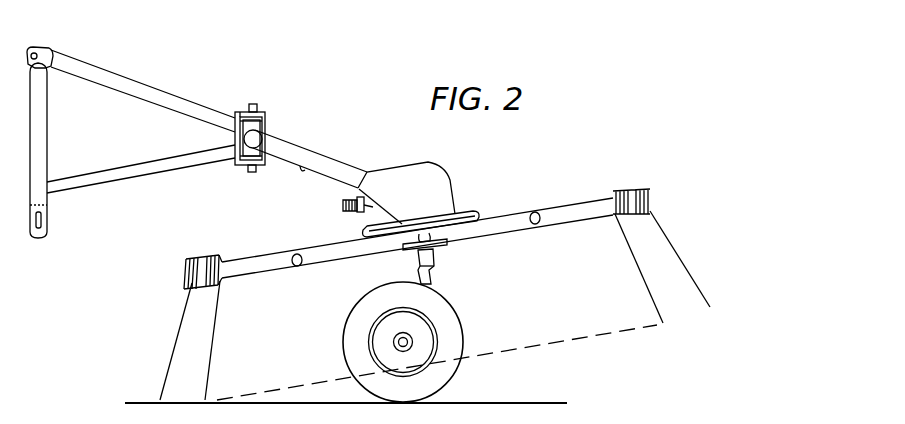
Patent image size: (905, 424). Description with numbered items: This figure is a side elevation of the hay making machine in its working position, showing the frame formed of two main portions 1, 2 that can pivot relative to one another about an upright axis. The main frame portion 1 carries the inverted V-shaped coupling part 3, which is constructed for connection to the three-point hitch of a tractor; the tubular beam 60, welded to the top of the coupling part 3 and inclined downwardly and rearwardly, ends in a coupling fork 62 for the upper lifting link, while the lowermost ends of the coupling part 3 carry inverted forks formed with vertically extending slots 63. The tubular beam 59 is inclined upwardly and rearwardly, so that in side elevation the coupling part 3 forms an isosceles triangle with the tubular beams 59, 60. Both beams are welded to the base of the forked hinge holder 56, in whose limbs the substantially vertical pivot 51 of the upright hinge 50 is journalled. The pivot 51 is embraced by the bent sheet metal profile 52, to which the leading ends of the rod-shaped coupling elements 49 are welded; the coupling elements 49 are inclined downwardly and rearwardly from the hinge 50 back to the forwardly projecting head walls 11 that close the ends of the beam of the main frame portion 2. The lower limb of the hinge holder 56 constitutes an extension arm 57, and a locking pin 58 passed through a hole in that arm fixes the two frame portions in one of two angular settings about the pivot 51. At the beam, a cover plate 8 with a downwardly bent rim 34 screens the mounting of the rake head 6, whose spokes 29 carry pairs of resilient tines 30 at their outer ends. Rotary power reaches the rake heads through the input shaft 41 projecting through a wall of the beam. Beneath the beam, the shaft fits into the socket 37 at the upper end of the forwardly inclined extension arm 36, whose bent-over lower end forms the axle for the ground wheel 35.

The main frame portion 1 is at (131, 134).
The main frame portion 2 is at (354, 172).
The coupling part 3 is at (40, 115).
The rake head 6 is at (238, 254).
The cover plate 8 is at (421, 222).
The head wall 11 is at (393, 175).
The spoke 29 is at (565, 210).
The resilient tines 30 is at (178, 320).
The rim 34 is at (466, 212).
The ground wheel 35 is at (360, 317).
The extension arm 36 is at (434, 277).
The socket 37 is at (408, 262).
The input shaft 41 is at (343, 207).
The coupling element 49 is at (310, 167).
The hinge 50 is at (251, 138).
The pivot 51 is at (254, 104).
The sheet metal profile 52 is at (258, 124).
The hinge holder 56 is at (240, 112).
The extension arm 57 is at (280, 166).
The locking pin 58 is at (302, 174).
The tubular beam 59 is at (114, 171).
The tubular beam 60 is at (133, 82).
The coupling fork 62 is at (44, 52).
The slot 63 is at (47, 222).